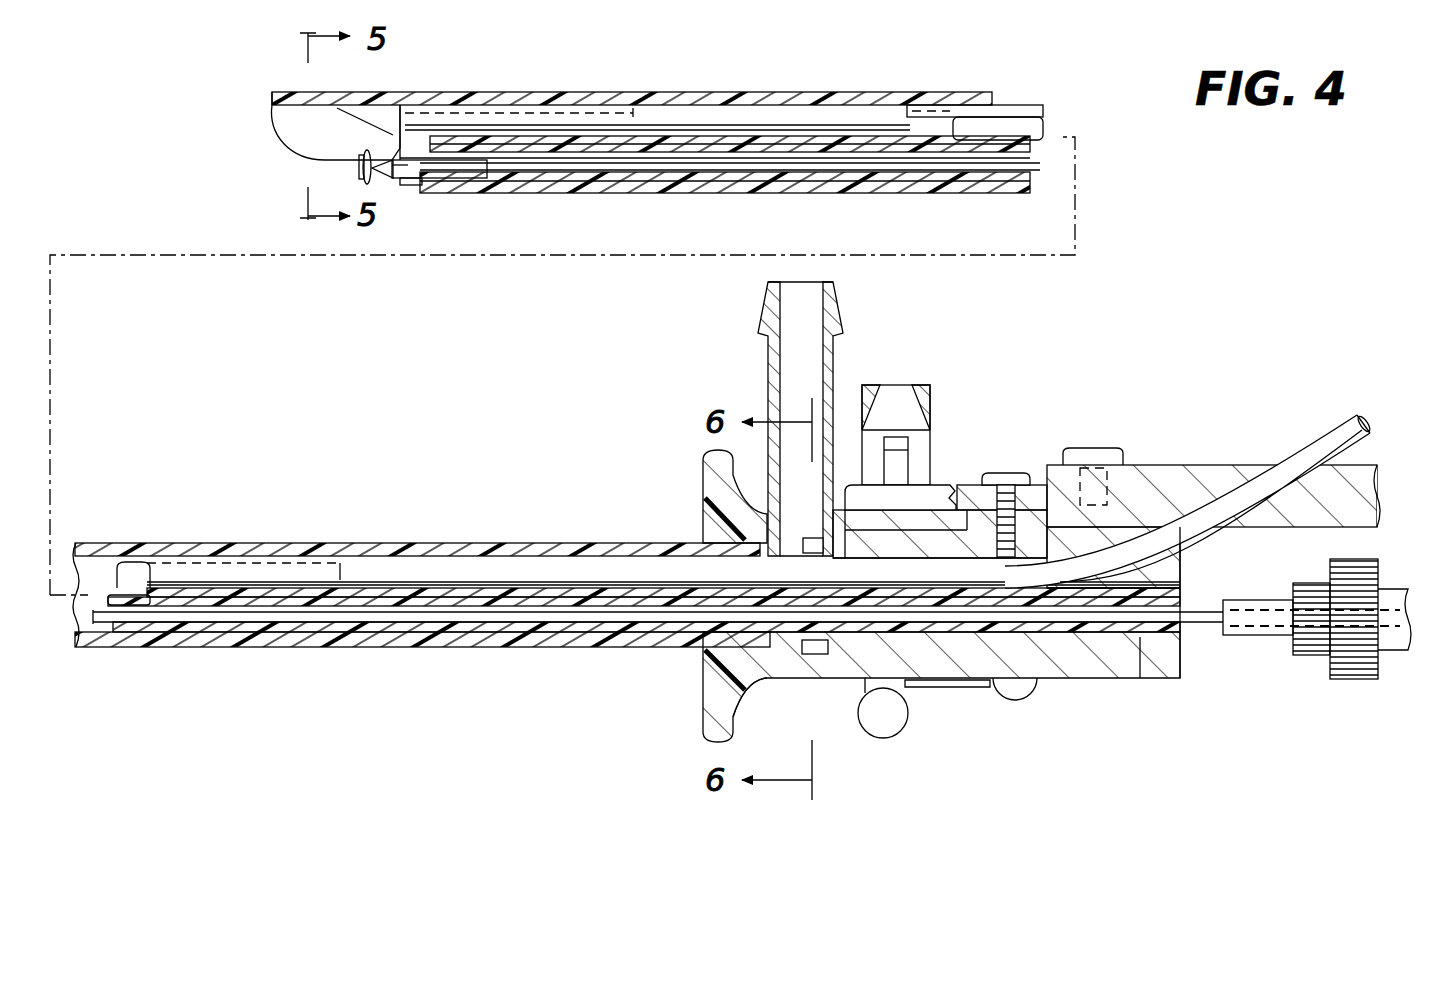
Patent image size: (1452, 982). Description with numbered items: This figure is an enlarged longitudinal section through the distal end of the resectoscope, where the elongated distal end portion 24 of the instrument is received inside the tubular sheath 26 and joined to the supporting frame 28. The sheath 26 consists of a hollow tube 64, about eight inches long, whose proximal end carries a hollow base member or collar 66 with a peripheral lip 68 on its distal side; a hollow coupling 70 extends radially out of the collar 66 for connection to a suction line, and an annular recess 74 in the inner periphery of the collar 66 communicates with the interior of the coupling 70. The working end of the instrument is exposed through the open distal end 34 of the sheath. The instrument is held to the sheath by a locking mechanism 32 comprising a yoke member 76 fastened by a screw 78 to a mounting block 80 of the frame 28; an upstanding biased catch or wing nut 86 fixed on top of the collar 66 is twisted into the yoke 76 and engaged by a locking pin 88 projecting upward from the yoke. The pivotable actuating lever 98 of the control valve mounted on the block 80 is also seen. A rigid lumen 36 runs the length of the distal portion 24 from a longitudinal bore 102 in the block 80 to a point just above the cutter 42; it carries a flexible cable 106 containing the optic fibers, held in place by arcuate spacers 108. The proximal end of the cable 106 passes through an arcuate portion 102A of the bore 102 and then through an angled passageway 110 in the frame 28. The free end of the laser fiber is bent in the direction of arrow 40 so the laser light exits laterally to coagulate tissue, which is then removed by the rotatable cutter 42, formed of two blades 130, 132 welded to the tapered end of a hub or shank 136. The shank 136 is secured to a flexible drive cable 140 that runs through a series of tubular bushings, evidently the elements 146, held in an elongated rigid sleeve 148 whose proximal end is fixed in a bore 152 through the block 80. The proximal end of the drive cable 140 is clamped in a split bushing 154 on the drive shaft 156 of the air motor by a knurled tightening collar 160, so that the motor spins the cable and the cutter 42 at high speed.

The elongated distal end portion 24 is at (427, 578).
The tubular sheath 26 is at (722, 90).
The supporting frame 28 is at (1205, 425).
The locking mechanism 32 is at (948, 480).
The open distal end 34 is at (440, 188).
The lumen 36 is at (553, 120).
The arrow 40 is at (278, 182).
The rotatable cutting member 42 is at (407, 185).
The hollow tube 64 is at (780, 92).
The base member or collar 66 is at (793, 672).
The peripheral lip 68 is at (710, 687).
The coupling 70 is at (837, 355).
The annular recess 74 is at (810, 538).
The yoke member 76 is at (1060, 462).
The screw 78 is at (1020, 485).
The mounting block 80 is at (1067, 663).
The catch or wing nut 86 is at (928, 458).
The locking pin 88 is at (902, 453).
The pivotable actuating lever 98 is at (900, 692).
The longitudinal bore 102 is at (898, 580).
The arcuate portion of the bore 102A is at (1175, 548).
The flexible cable 106 is at (1303, 447).
The arcuate spacers 108 is at (655, 85).
The angled passageway 110 is at (1378, 462).
The blade 130 is at (362, 185).
The blade 132 is at (395, 120).
The hub or shank 136 is at (477, 160).
The flexible drive cable 140 is at (1040, 173).
The tube wall 146 is at (832, 187).
The elongated rigid sleeve 148 is at (1040, 153).
The bore 152 is at (1140, 637).
The split bushing 154 is at (1237, 632).
The drive shaft 156 is at (1398, 650).
The knurled tightening collar 160 is at (1330, 663).